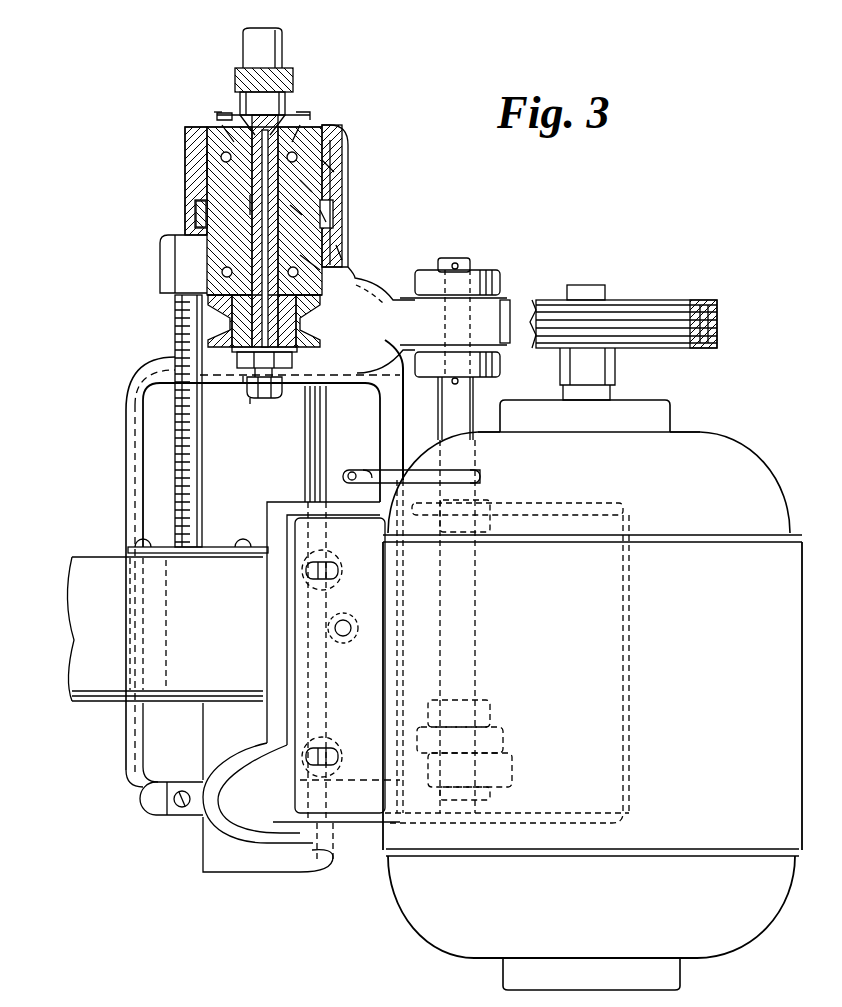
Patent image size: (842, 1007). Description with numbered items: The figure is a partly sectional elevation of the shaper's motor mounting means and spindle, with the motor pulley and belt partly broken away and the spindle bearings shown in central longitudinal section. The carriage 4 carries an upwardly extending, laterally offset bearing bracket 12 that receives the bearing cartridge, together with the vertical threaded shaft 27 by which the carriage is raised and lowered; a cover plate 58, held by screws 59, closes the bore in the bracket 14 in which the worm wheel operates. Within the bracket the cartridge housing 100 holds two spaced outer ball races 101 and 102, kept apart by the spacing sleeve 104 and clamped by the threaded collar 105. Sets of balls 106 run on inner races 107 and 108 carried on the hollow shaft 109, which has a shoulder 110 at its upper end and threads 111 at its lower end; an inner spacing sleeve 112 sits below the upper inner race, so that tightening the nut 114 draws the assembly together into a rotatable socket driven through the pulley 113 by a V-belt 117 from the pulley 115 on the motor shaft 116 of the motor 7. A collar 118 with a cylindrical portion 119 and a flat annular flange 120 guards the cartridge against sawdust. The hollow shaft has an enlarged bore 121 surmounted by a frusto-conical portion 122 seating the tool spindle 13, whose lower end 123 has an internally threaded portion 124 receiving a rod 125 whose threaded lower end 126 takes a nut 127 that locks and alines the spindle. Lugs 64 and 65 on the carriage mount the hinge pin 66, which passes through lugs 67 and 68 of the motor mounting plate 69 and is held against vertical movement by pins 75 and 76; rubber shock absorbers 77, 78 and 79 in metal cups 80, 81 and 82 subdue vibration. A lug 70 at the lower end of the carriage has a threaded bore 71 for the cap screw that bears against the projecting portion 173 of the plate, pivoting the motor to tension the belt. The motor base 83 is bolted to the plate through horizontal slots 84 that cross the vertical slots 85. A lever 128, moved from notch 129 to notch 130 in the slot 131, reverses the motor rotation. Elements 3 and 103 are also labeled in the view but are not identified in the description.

The rod 3 is at (322, 446).
The carriage 4 is at (125, 454).
The motor 7 is at (792, 643).
The bearing bracket 12 is at (280, 198).
The tool spindle 13 is at (272, 52).
The bracket 14 is at (110, 703).
The shaft 27 is at (193, 498).
The cover plate 58 is at (220, 548).
The screws 59 is at (150, 545).
The lug 64 is at (510, 306).
The lug 65 is at (514, 778).
The hinge pin 66 is at (468, 406).
The lug 67 is at (495, 510).
The lug 68 is at (492, 712).
The motor mounting plate 69 is at (272, 612).
The lug 70 is at (162, 814).
The threaded bore 71 is at (182, 790).
The pin 75 is at (452, 384).
The pin 76 is at (464, 262).
The shock absorber 77 is at (502, 296).
The shock absorber 78 is at (500, 360).
The shock absorber 79 is at (512, 756).
The metal cup 80 is at (496, 274).
The metal cup 81 is at (381, 540).
The metal cup 82 is at (505, 736).
The motor base 83 is at (300, 640).
The mounting slots 84 is at (330, 562).
The slots 85 is at (332, 624).
The housing 100 is at (346, 134).
The outer ball race 101 is at (332, 152).
The outer ball race 102 is at (340, 252).
The pulley 103 is at (318, 300).
The spacing sleeve 104 is at (300, 212).
The threaded collar 105 is at (302, 132).
The balls 106 is at (206, 165).
The inner race 107 is at (214, 190).
The inner race 108 is at (178, 262).
The hollow shaft 109 is at (250, 203).
The shoulder 110 is at (214, 117).
The threads 111 is at (242, 382).
The spacing sleeve 112 is at (236, 218).
The pulley 113 is at (300, 338).
The nut 114 is at (294, 364).
The pulley 115 is at (683, 300).
The motor shaft 116 is at (592, 285).
The V-belt 117 is at (716, 323).
The collar 118 is at (292, 113).
The cylindrical portion 119 is at (226, 115).
The annular flange 120 is at (224, 124).
The enlarged bore 121 is at (312, 186).
The frusto-conical portion 122 is at (312, 125).
The lower end of spindle 123 is at (288, 100).
The internally threaded portion 124 is at (336, 168).
The rod 125 is at (326, 216).
The threaded lower end 126 is at (268, 400).
The nut 127 is at (250, 402).
The lever 128 is at (355, 460).
The notch 129 is at (441, 619).
The notch 130 is at (482, 482).
The slot 131 is at (470, 474).
The projecting portion 173 is at (222, 832).